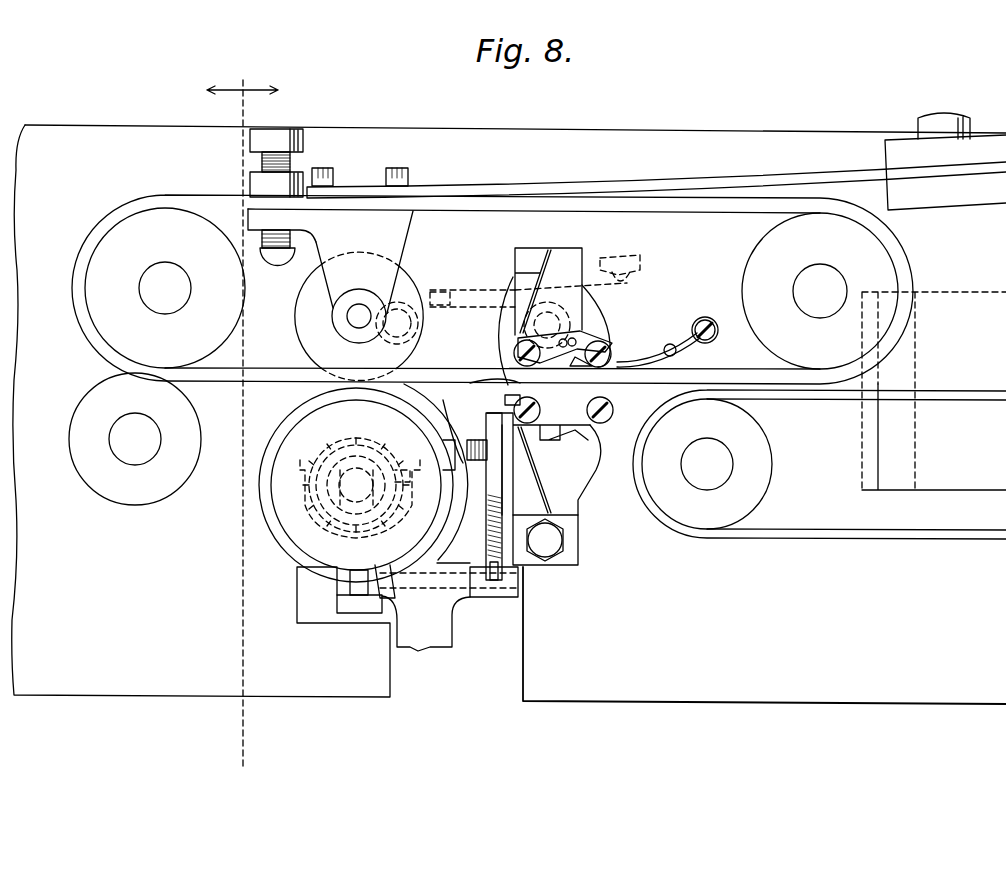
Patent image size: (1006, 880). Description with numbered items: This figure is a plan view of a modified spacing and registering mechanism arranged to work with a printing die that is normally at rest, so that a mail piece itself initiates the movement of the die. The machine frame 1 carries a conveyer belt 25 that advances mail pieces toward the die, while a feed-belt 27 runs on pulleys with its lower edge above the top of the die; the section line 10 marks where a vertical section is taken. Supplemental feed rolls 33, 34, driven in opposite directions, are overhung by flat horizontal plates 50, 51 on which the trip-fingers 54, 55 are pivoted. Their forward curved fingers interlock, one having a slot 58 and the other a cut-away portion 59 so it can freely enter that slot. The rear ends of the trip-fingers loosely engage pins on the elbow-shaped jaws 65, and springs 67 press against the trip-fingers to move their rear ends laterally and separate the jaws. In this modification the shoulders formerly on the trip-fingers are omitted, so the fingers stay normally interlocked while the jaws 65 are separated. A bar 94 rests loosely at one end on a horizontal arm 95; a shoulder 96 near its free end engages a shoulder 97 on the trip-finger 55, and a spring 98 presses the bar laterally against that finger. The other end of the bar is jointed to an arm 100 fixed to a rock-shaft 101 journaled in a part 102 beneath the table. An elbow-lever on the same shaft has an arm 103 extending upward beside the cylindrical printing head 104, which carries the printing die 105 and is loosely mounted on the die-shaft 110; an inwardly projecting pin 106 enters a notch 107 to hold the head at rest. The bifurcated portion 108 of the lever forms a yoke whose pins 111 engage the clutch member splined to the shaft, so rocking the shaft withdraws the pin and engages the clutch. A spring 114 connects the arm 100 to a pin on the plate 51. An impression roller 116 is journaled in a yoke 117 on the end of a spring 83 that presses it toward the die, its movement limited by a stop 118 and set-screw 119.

The frame 1 is at (509, 425).
The direction of movement arrow 10 is at (242, 77).
The conveyer belt 25 is at (819, 415).
The feed-belt 27 is at (706, 368).
The supplemental feed roll 33 is at (600, 312).
The supplemental feed roll 34 is at (578, 507).
The flat horizontal plate 50 is at (576, 258).
The flat horizontal plate 51 is at (580, 543).
The trip-finger 54 is at (508, 360).
The trip-finger 55 is at (505, 400).
The slot 58 is at (518, 348).
The cut-away portion 59 is at (470, 383).
The jaws 65 is at (608, 422).
The springs 67 is at (512, 283).
The spring 83 is at (683, 178).
The bar 94 is at (493, 483).
The horizontal arm 95 is at (447, 470).
The shoulder 96 is at (532, 452).
The shoulder 97 is at (490, 418).
The spring 98 is at (440, 462).
The arm 100 is at (493, 587).
The rock-shaft 101 is at (764, 635).
The part beneath the table 102 is at (417, 617).
The arm of elbow-lever 103 is at (353, 605).
The cylindrical printing head 104 is at (285, 498).
The printing die 105 is at (461, 555).
The inwardly projecting pin 106 is at (320, 532).
The notch 107 is at (385, 565).
The bifurcated portion of elbow-lever 108 is at (325, 532).
The die-shaft 110 is at (337, 450).
The pins 111 is at (320, 468).
The spring 114 is at (530, 544).
The impression roller 116 is at (300, 331).
The yoke 117 is at (395, 252).
The stop 118 is at (277, 267).
The set-screw 119 is at (290, 135).